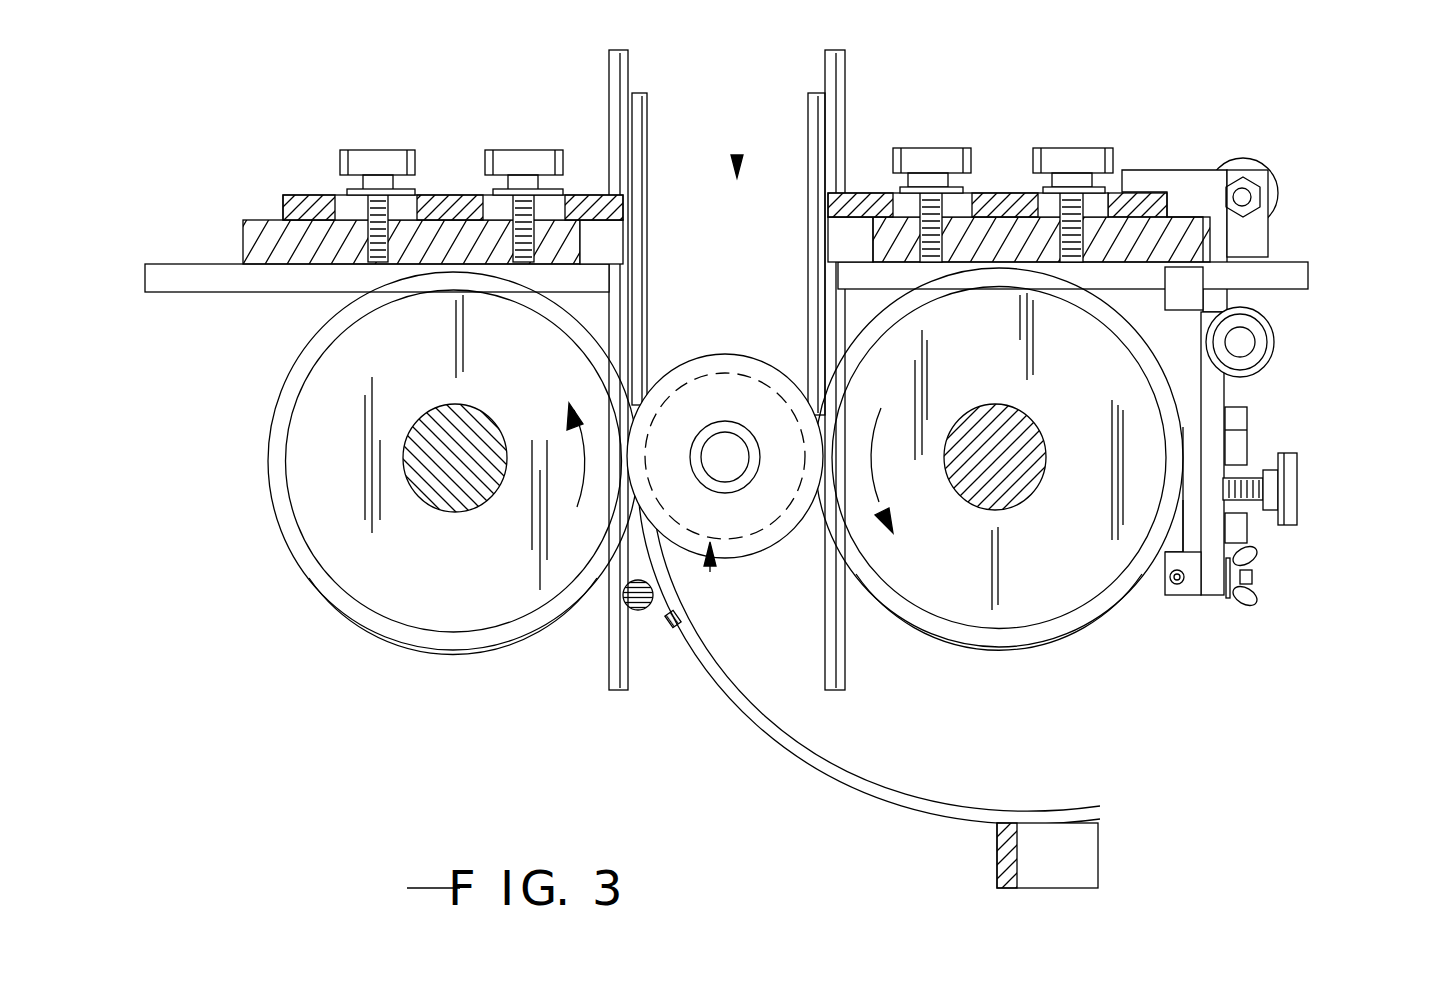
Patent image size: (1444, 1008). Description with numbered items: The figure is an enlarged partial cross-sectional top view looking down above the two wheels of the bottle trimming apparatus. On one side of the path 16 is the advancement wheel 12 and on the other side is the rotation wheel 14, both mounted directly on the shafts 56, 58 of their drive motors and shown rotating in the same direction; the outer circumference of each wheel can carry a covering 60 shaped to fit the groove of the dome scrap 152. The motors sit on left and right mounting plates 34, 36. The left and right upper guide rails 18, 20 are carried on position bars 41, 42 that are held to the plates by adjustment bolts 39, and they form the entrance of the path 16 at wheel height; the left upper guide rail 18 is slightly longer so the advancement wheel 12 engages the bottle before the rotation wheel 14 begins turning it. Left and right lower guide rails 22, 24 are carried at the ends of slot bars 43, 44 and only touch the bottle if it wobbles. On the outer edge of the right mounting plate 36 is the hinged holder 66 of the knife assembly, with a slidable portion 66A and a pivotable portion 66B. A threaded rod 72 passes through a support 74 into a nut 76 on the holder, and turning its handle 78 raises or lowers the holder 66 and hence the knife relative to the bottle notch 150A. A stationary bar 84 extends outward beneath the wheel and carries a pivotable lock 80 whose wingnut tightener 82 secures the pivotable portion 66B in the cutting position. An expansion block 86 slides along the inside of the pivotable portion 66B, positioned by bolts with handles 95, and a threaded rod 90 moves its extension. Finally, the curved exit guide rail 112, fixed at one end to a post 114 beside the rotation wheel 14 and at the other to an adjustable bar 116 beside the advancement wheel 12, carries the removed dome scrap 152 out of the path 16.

The advancement wheel 12 is at (997, 359).
The rotation wheel 14 is at (428, 374).
The path 16 is at (740, 160).
The left upper guide rail 18 is at (650, 338).
The right upper guide rail 20 is at (812, 322).
The left lower guide rail 22 is at (630, 68).
The right lower guide rail 24 is at (846, 76).
The left mounting plate 34 is at (248, 234).
The right mounting plate 36 is at (1130, 205).
The adjustment bolts 39 is at (478, 212).
The position bar 41 is at (297, 205).
The position bar 42 is at (1000, 205).
The slot bar 43 is at (163, 291).
The slot bar 44 is at (1297, 268).
The shaft 56 is at (452, 500).
The shaft 58 is at (1017, 483).
The covering 60 is at (362, 627).
The hinged holder 66 is at (1273, 342).
The slidable portion 66A is at (1217, 295).
The pivotable portion 66B is at (1223, 397).
The threaded rod 72 is at (1247, 180).
The support 74 is at (1160, 177).
The nut 76 is at (1240, 178).
The handle 78 is at (1280, 192).
The pivotable lock 80 is at (1190, 585).
The wingnut tightener 82 is at (1257, 597).
The stationary bar 84 is at (1180, 345).
The expansion block 86 is at (1180, 536).
The threaded rod 90 is at (1290, 474).
The handles 95 is at (1243, 440).
The exit guide rail 112 is at (857, 793).
The post 114 is at (660, 615).
The adjustable bar 116 is at (1085, 847).
The notch 150A is at (707, 573).
The dome scrap 152 is at (770, 545).